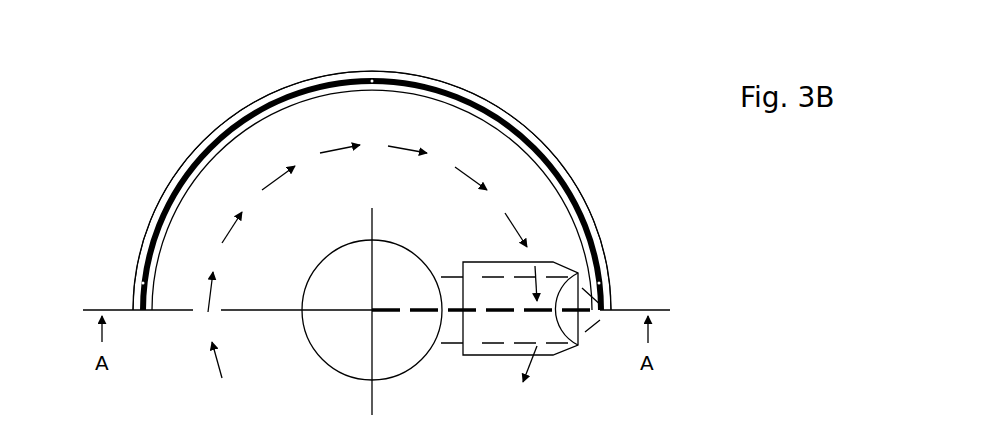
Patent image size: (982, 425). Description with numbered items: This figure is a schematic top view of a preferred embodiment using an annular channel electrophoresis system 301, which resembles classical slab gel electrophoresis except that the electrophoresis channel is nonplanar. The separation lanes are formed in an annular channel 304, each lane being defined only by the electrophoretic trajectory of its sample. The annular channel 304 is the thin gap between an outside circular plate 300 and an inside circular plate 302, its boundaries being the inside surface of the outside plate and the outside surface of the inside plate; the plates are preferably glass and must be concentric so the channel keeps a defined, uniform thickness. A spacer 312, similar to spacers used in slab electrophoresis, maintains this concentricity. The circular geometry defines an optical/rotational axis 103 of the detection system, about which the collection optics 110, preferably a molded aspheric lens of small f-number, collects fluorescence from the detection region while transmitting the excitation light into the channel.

The outside circular plate 300 is at (594, 217).
The annular channel electrophoresis system 301 is at (182, 122).
The inside circular plate 302 is at (522, 130).
The annular channel 304 is at (568, 183).
The spacer 312 is at (372, 80).
The optical/rotational axis 103 is at (372, 395).
The collection optics 110 is at (465, 357).